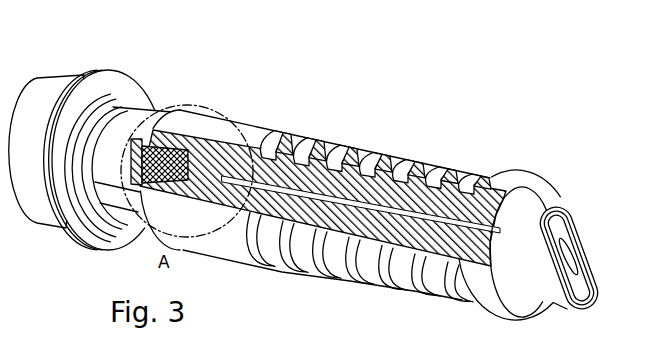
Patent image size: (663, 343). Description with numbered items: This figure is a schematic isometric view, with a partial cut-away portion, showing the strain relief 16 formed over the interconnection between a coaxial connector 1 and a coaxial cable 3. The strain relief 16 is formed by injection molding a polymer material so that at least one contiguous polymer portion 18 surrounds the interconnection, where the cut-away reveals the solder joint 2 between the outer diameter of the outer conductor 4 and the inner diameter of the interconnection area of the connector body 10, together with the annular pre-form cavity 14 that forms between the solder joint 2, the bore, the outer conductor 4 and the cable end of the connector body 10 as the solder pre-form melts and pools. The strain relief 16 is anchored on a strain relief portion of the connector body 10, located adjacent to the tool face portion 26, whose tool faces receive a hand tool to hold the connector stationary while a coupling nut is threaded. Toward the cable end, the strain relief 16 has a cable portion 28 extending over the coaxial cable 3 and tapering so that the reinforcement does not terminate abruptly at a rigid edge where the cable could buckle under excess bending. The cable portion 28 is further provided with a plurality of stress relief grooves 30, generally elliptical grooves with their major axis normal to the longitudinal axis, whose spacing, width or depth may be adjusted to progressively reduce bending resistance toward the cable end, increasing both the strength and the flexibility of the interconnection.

The coaxial connector 1 is at (65, 83).
The connector body 10 is at (112, 72).
The tool face portion 26 is at (127, 118).
The solder joint 2 is at (168, 165).
The annular pre-form cavity 14 is at (202, 160).
The strain relief 16 is at (263, 130).
The stress relief grooves 30 is at (317, 163).
The contiguous polymer portion 18 is at (380, 160).
The cable portion 28 is at (443, 177).
The outer conductor 4 is at (563, 213).
The coaxial cable 3 is at (570, 257).